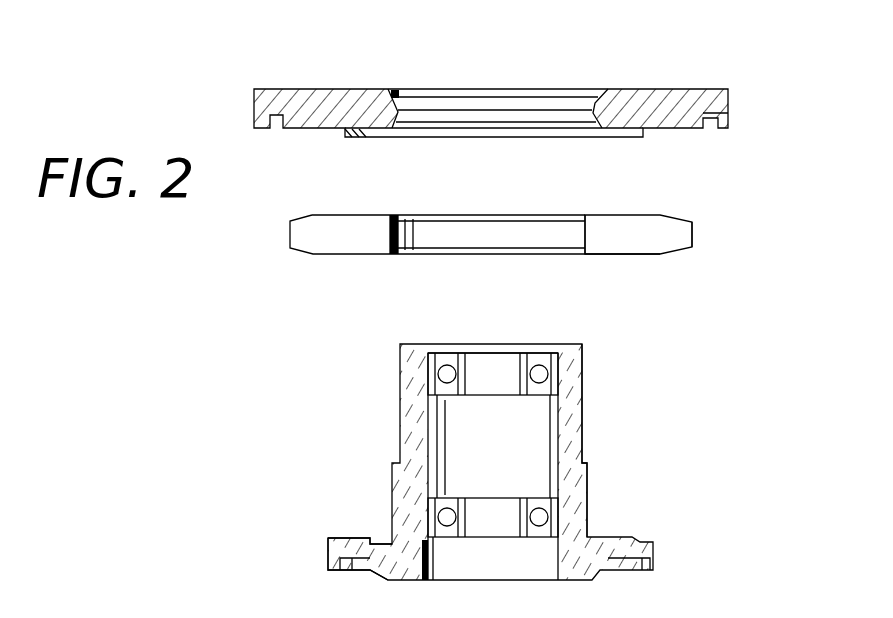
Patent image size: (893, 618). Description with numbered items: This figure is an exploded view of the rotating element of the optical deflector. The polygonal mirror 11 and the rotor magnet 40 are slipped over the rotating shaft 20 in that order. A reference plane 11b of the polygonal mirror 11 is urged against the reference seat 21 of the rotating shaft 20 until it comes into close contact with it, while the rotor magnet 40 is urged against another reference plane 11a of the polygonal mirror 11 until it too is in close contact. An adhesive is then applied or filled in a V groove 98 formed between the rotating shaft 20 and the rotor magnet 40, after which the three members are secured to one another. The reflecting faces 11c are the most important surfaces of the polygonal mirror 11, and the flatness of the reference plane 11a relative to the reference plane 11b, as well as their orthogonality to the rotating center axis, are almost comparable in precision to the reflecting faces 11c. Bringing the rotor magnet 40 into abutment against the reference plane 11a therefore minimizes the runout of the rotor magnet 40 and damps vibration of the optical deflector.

The rotor magnet 40 is at (730, 103).
The polygonal mirror 11 is at (543, 214).
The reference plane 11a is at (610, 214).
The reference plane 11b is at (652, 255).
The reflecting faces 11c is at (693, 225).
The rotating shaft 20 is at (530, 462).
The reference seat 21 is at (352, 538).
The V groove 98 is at (583, 460).